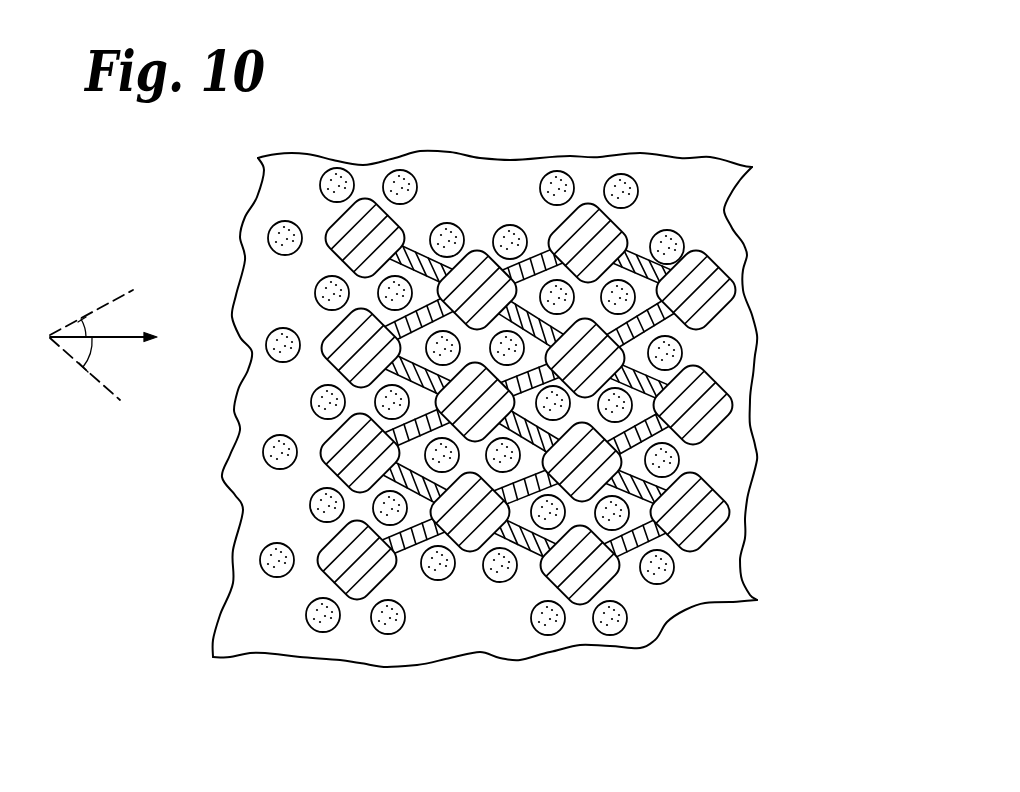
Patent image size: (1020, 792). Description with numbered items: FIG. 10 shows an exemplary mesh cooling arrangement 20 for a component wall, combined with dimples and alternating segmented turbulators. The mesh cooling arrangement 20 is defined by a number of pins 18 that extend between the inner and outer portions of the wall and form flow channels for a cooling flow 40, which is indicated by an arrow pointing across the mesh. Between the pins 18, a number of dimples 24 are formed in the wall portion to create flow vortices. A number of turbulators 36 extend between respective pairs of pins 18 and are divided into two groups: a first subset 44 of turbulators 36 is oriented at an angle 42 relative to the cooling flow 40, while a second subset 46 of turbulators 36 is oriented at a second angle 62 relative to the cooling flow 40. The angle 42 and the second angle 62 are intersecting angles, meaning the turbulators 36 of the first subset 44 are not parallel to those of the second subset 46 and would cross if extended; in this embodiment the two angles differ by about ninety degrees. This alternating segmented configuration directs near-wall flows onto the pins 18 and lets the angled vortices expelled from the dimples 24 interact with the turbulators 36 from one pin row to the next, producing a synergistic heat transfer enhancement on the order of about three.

The pins 18 is at (747, 253).
The mesh cooling arrangement 20 is at (826, 121).
The dimples 24 is at (630, 191).
The turbulators 36 is at (413, 257).
The cooling flow 40 is at (83, 326).
The angle 42 is at (97, 345).
The first subset of turbulators 44 is at (630, 253).
The second subset of turbulators 46 is at (665, 430).
The second angle 62 is at (84, 331).